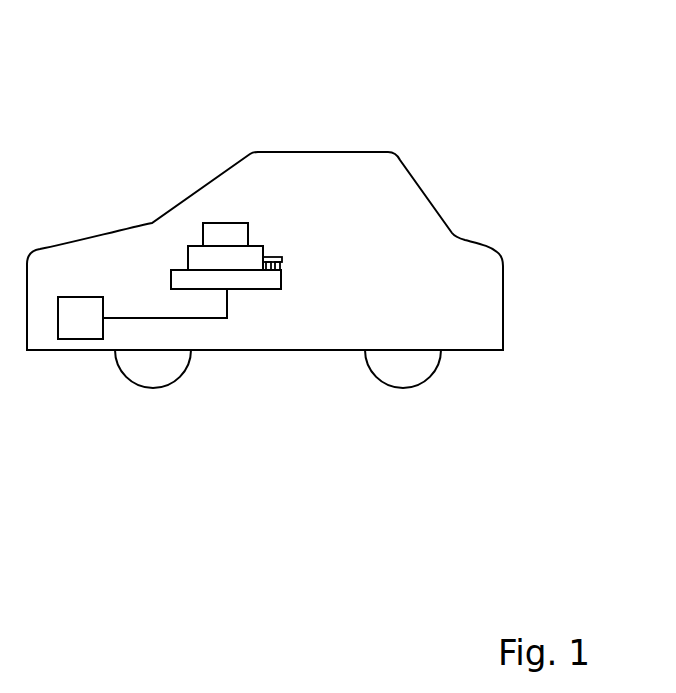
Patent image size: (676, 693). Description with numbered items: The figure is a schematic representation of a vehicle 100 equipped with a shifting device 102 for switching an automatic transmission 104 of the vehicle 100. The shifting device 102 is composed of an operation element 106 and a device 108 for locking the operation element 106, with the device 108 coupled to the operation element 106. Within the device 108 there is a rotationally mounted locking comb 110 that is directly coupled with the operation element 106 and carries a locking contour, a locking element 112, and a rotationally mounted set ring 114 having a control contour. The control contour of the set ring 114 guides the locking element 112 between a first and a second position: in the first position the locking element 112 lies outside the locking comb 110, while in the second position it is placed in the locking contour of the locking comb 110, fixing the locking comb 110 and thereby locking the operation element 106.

The vehicle 100 is at (345, 140).
The shifting device 102 is at (228, 207).
The automatic transmission 104 is at (80, 320).
The operation element 106 is at (185, 269).
The device for locking the operation element 108 is at (223, 269).
The locking comb 110 is at (200, 258).
The locking element 112 is at (302, 272).
The set ring 114 is at (253, 280).